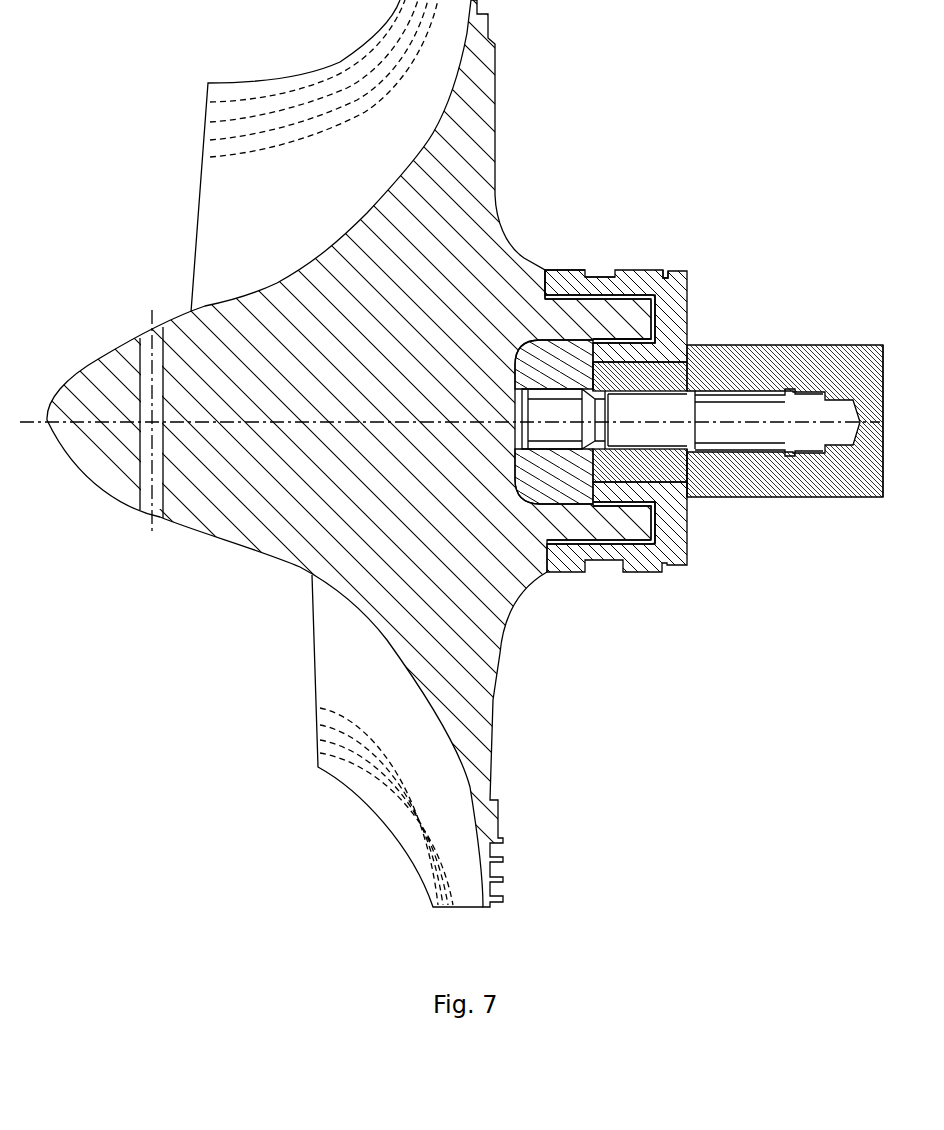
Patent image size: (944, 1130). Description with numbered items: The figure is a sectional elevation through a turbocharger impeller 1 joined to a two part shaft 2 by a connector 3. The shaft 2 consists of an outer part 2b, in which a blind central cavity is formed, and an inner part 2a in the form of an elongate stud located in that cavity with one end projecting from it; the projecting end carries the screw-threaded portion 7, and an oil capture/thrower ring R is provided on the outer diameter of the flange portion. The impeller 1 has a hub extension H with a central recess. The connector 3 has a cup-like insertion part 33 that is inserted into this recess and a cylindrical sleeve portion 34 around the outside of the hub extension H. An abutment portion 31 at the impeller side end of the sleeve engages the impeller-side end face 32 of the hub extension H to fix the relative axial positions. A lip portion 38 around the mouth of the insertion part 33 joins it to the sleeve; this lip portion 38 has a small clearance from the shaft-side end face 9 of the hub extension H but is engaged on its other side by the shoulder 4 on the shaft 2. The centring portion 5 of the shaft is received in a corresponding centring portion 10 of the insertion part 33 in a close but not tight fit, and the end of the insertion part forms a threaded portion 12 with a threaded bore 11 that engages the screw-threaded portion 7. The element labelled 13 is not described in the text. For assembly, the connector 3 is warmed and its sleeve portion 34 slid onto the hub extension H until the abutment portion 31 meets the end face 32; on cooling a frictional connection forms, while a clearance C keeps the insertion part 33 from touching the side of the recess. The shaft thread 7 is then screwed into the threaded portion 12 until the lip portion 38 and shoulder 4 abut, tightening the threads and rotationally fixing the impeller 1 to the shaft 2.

The impeller 1 is at (463, 122).
The shaft 2 is at (738, 384).
The inner part of the shaft 2a is at (812, 432).
The outer part of the shaft 2b is at (827, 358).
The connector 3 is at (687, 392).
The shoulder 4 is at (687, 487).
The centring portion of the shaft 5 is at (645, 468).
The screw-threaded portion 7 is at (690, 490).
The shaft-side end face 9 is at (672, 315).
The centring portion of the insertion part 10 is at (675, 283).
The threaded bore 11 is at (553, 427).
The threaded portion 12 is at (537, 467).
The ring lower plate 13 is at (600, 563).
The abutment portion 31 is at (553, 285).
The impeller-side end face 32 is at (537, 277).
The insertion part 33 is at (590, 358).
The cylindrical sleeve portion 34 is at (577, 288).
The lip portion 38 is at (612, 350).
The clearance C is at (605, 340).
The hub extension H is at (542, 307).
The oil capture/thrower ring R is at (652, 312).